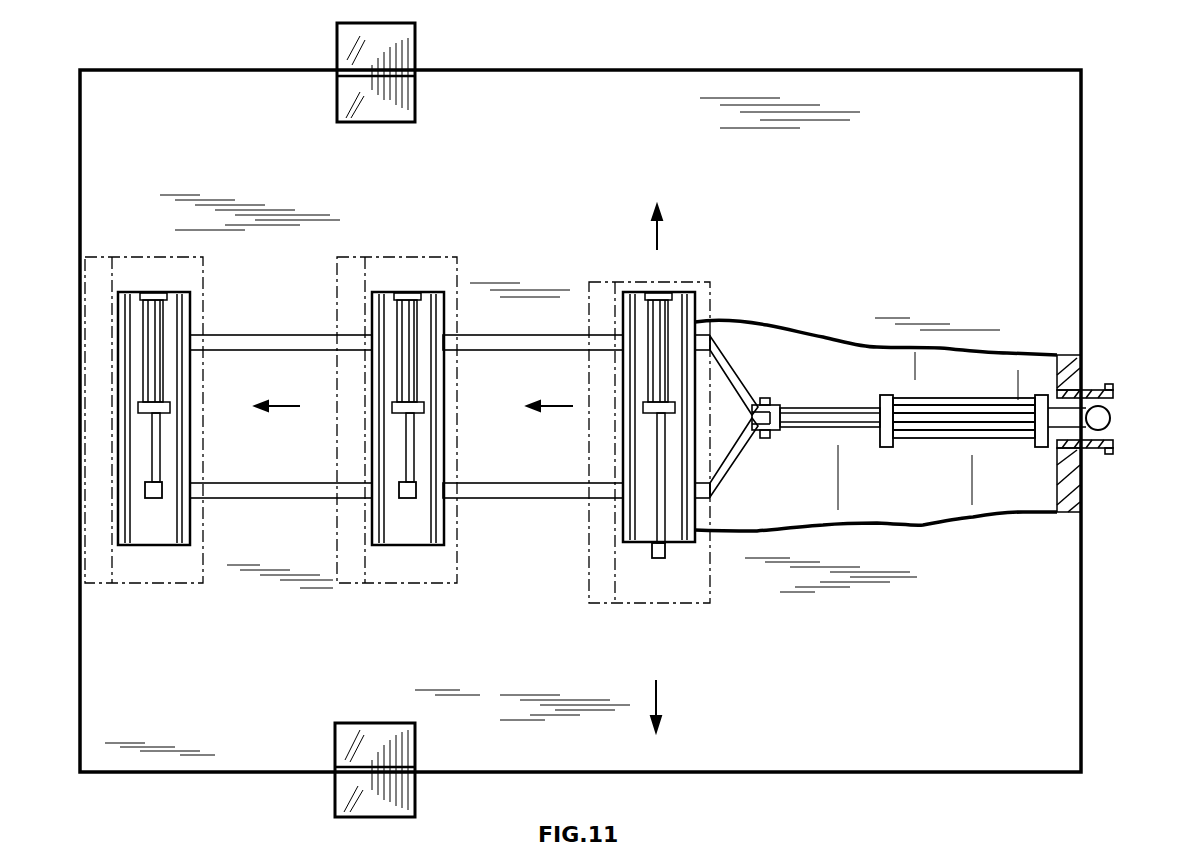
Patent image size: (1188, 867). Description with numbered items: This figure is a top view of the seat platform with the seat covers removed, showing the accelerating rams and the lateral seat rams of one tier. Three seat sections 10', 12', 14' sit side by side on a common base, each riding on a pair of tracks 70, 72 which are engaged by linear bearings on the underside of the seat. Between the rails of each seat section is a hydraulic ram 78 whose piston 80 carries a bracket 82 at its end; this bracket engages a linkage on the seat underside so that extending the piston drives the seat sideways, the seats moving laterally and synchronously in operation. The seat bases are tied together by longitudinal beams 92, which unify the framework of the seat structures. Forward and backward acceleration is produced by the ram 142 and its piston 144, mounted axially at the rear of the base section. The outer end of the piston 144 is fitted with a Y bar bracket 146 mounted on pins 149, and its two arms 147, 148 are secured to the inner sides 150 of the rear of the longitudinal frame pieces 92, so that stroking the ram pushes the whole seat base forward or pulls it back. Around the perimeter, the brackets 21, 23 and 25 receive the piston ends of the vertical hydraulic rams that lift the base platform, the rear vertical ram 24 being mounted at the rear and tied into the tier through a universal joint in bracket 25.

The bracket 21 is at (415, 40).
The bracket 23 is at (417, 748).
The seat section 10' is at (171, 416).
The seat section 12' is at (422, 416).
The seat section 14' is at (668, 426).
The track 70 is at (122, 292).
The track 72 is at (189, 308).
The hydraulic ram 78 is at (160, 378).
The piston 80 is at (160, 456).
The bracket 82 is at (160, 498).
The longitudinal beam 92 is at (305, 335).
The inner sides 150 is at (715, 340).
The arm 147 is at (738, 370).
The arm 148 is at (742, 455).
The bracket 146 is at (775, 401).
The pins 149 is at (770, 438).
The piston 144 is at (852, 407).
The ram 142 is at (980, 398).
The bracket 25 is at (1105, 388).
The hydraulic ram 24 is at (1111, 418).